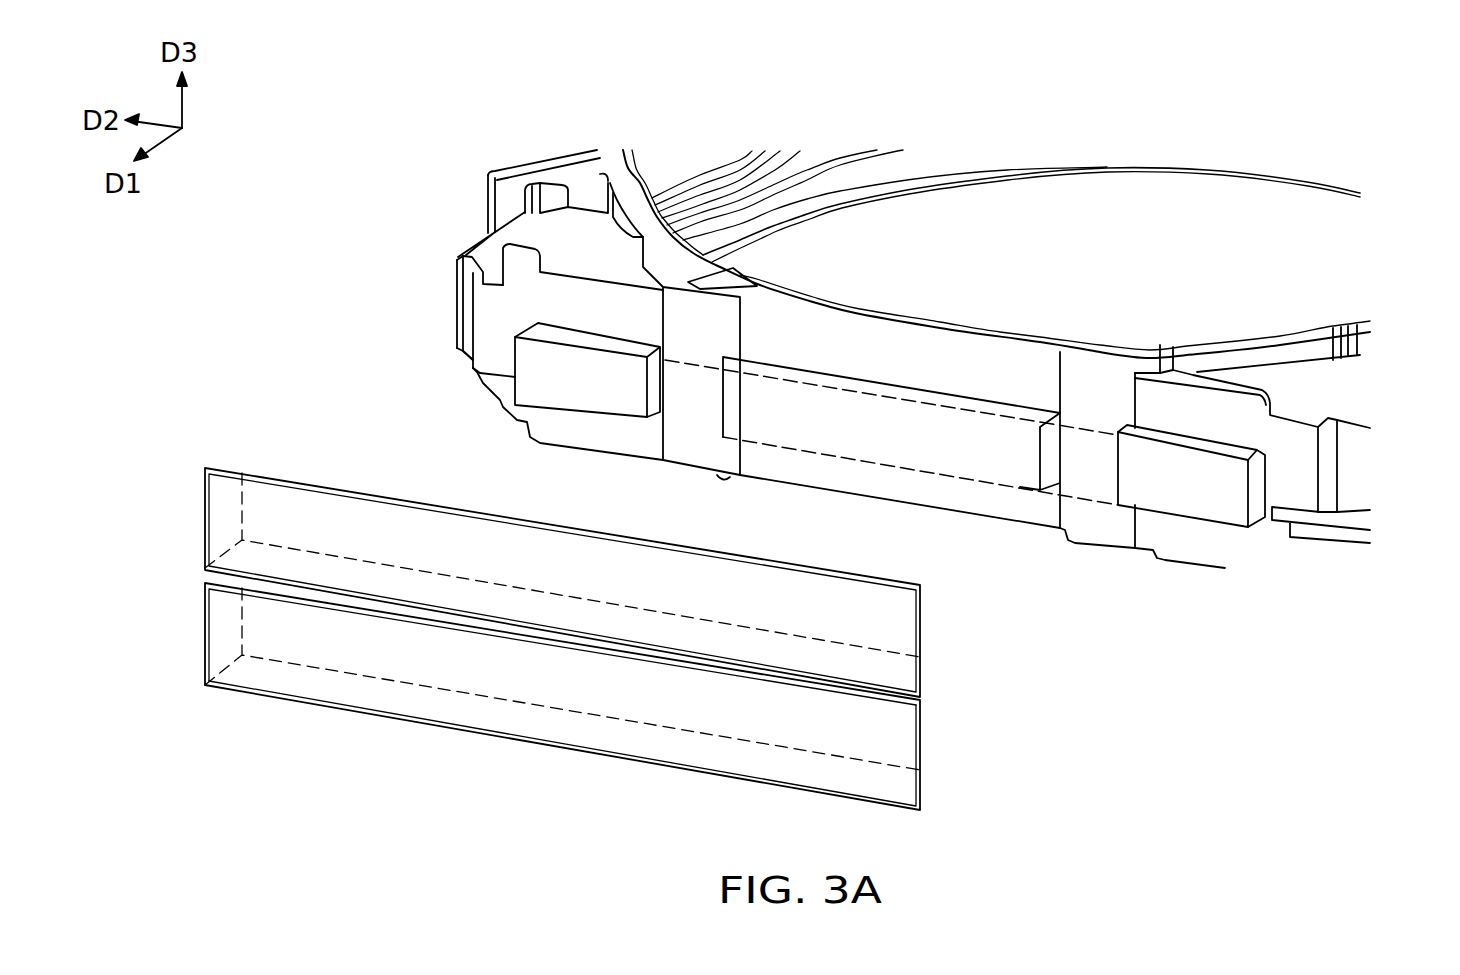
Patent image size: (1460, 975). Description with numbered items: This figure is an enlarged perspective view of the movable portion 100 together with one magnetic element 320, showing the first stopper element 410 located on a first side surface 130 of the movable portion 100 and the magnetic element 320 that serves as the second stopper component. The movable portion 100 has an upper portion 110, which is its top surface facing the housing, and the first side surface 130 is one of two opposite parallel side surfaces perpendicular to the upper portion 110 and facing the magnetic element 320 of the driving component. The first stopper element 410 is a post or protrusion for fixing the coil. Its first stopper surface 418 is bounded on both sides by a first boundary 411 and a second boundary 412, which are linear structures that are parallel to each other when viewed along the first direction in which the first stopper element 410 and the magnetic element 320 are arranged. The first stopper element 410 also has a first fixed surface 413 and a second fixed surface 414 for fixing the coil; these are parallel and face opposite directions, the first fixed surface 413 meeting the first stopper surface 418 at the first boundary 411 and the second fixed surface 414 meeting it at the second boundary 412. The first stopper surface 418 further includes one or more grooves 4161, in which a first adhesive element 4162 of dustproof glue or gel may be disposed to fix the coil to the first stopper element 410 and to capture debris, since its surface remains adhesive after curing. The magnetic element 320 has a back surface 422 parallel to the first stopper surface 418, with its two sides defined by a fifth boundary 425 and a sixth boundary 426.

The movable portion 100 is at (575, 134).
The upper portion 110 is at (1320, 383).
The first side surface 130 is at (1292, 466).
The magnetic element 320 is at (378, 670).
The first stopper element 410 is at (997, 558).
The first boundary 411 is at (513, 360).
The second boundary 412 is at (1248, 492).
The first fixed surface 413 is at (497, 349).
The second fixed surface 414 is at (1266, 496).
The first stopper surface 418 is at (873, 465).
The back surface 422 is at (446, 682).
The fifth boundary 425 is at (203, 630).
The sixth boundary 426 is at (922, 752).
The groove 4161 is at (694, 394).
The first adhesive element 4162 is at (680, 378).